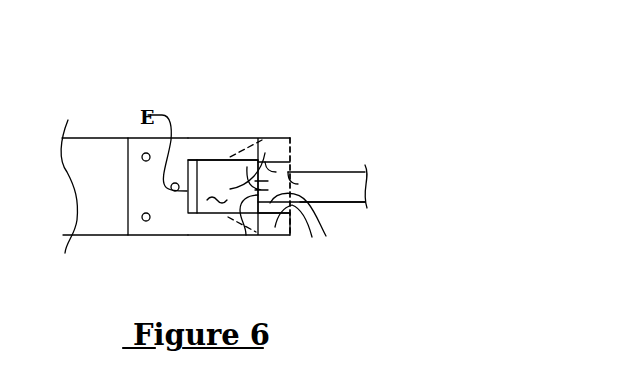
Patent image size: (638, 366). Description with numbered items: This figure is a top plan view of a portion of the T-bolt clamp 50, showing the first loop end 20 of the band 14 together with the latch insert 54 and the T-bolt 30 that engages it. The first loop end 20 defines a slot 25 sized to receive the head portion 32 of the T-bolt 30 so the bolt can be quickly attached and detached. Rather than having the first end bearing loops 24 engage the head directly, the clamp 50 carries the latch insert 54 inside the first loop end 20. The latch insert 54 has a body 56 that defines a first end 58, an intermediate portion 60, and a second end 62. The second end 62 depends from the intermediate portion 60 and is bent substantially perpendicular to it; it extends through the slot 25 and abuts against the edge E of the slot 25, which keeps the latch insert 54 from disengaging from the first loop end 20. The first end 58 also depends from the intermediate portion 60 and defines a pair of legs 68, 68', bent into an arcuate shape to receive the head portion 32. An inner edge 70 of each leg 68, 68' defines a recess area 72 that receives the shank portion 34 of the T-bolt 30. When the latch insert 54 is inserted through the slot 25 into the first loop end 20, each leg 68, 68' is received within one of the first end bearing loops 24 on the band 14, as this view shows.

The band 14 is at (96, 138).
The first loop end 20 is at (280, 138).
The first end bearing loops 24 is at (292, 138).
The slot 25 is at (223, 186).
The T-bolt 30 is at (333, 172).
The head portion 32 is at (246, 235).
The shank portion 34 is at (343, 202).
The T-bolt clamp 50 is at (312, 73).
The latch insert 54 is at (180, 214).
The body 56 is at (200, 213).
The first end 58 is at (267, 235).
The intermediate portion 60 is at (215, 160).
The second end 62 is at (195, 160).
The leg 68 is at (324, 243).
The leg 68' is at (325, 144).
The inner edge 70 is at (260, 138).
The recess area 72 is at (231, 160).